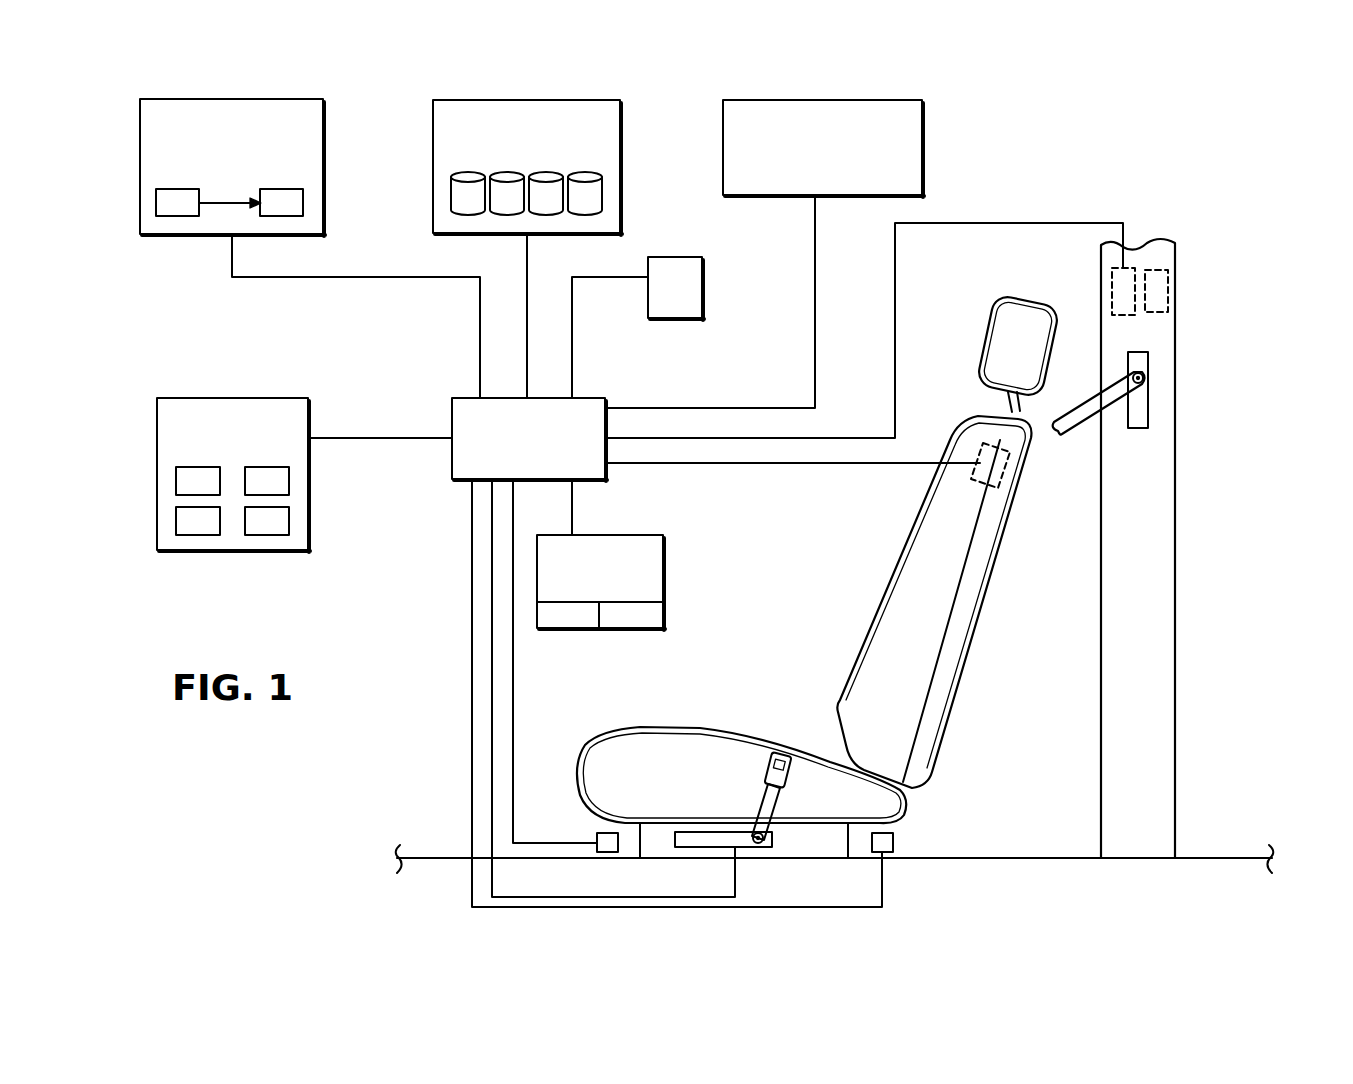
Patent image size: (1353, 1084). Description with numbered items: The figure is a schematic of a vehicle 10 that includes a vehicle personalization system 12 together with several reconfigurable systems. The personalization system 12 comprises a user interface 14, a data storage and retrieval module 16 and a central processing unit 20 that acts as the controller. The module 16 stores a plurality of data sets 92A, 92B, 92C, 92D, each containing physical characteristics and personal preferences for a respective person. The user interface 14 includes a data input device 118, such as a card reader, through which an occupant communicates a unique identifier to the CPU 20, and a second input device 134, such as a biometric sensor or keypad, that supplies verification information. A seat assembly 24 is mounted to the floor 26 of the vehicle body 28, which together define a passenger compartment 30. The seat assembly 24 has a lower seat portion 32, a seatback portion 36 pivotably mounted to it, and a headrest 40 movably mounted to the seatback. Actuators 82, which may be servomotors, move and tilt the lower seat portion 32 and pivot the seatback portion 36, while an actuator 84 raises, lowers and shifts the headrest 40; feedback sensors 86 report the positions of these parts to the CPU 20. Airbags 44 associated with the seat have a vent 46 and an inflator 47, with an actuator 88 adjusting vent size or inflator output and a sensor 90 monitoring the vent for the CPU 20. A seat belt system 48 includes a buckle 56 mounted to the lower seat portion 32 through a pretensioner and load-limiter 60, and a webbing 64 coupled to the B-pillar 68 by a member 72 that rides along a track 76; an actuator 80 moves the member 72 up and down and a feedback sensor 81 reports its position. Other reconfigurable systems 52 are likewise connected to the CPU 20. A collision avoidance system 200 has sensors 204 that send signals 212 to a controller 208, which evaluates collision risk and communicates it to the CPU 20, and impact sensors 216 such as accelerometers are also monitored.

The vehicle 10 is at (1216, 348).
The vehicle personalization system 12 is at (645, 494).
The user interface 14 is at (663, 561).
The data storage and retrieval module 16 is at (620, 135).
The central processing unit (CPU) 20 is at (440, 398).
The seat assembly 24 is at (568, 738).
The floor 26 is at (830, 825).
The vehicle body 28 is at (430, 858).
The passenger compartment 30 is at (795, 576).
The lower seat portion 32 is at (660, 740).
The seatback portion 36 is at (900, 570).
The headrest 40 is at (1000, 298).
The airbags 44 is at (258, 398).
The airbag vent 46 is at (176, 520).
The inflator 47 is at (289, 520).
The seat belt system 48 is at (1150, 434).
The other reconfigurable systems 52 is at (922, 137).
The buckle 56 is at (776, 752).
The pretensioner and load-limiter 60 is at (708, 848).
The webbing 64 is at (1066, 440).
The B-pillar 68 is at (1158, 601).
The member 72 is at (1145, 378).
The track 76 is at (1138, 416).
The actuator 80 is at (1130, 266).
The feedback sensor 81 is at (1168, 290).
The actuators 82 is at (893, 843).
The actuator 84 is at (970, 446).
The feedback sensors 86 is at (608, 853).
The actuator 88 is at (176, 480).
The sensor 90 is at (289, 480).
The data set 92A is at (452, 186).
The data set 92B is at (505, 211).
The data set 92C is at (546, 211).
The data set 92D is at (602, 186).
The data input device 118 is at (663, 612).
The second input device 134 is at (560, 629).
The collision avoidance system 200 is at (323, 140).
The sensors 204 is at (178, 216).
The controller 208 is at (282, 216).
The signals 212 is at (220, 205).
The impact sensors 216 is at (702, 292).